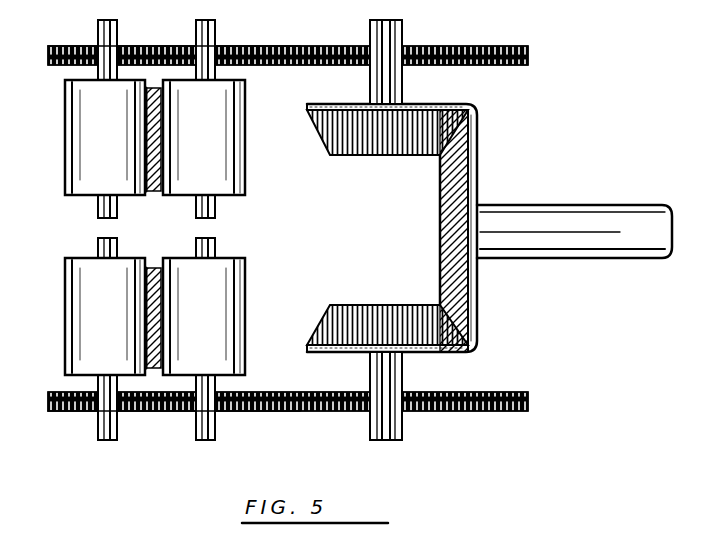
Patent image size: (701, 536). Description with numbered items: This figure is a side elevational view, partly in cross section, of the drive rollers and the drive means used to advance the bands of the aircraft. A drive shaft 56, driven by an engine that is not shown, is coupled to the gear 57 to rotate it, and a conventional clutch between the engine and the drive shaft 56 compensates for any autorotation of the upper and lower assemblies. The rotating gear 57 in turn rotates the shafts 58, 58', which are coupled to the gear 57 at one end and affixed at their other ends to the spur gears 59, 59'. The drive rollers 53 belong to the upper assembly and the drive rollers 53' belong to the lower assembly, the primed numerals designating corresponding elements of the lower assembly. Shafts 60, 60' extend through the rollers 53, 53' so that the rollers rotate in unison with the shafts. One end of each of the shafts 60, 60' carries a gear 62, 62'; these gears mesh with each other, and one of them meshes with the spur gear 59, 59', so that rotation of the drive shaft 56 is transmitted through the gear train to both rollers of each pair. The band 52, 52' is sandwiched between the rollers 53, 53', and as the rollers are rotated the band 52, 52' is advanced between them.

The band 52 is at (162, 159).
The band 52' is at (165, 301).
The drive roller 53 is at (152, 149).
The drive roller 53' is at (156, 306).
The drive shaft 56 is at (566, 205).
The gear 57 is at (441, 293).
The shaft 58 is at (411, 62).
The shaft 58' is at (415, 396).
The spur gear 59 is at (299, 72).
The spur gear 59' is at (300, 421).
The shaft 60 is at (156, 48).
The shaft 60' is at (156, 417).
The gear 62 is at (170, 31).
The gear 62' is at (162, 431).